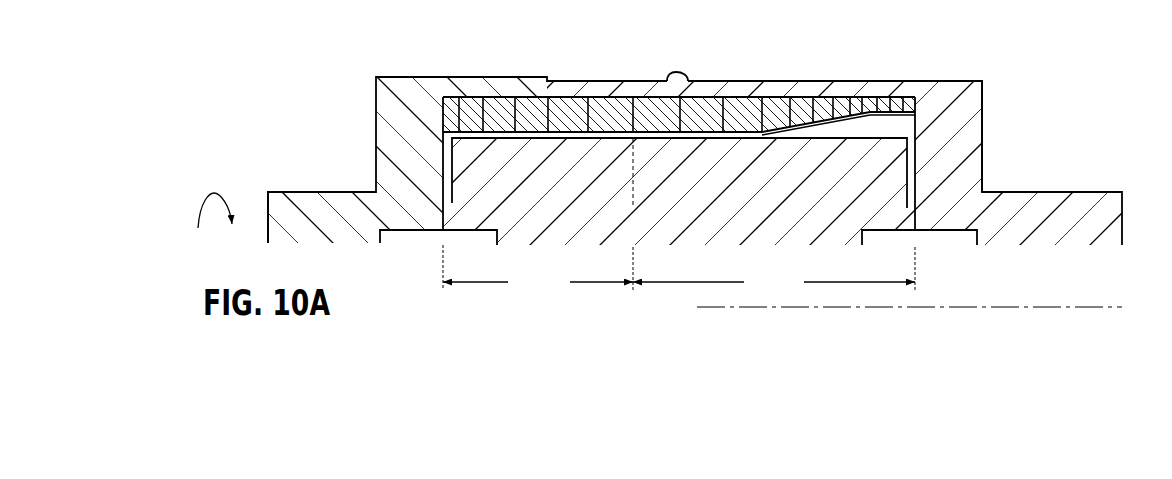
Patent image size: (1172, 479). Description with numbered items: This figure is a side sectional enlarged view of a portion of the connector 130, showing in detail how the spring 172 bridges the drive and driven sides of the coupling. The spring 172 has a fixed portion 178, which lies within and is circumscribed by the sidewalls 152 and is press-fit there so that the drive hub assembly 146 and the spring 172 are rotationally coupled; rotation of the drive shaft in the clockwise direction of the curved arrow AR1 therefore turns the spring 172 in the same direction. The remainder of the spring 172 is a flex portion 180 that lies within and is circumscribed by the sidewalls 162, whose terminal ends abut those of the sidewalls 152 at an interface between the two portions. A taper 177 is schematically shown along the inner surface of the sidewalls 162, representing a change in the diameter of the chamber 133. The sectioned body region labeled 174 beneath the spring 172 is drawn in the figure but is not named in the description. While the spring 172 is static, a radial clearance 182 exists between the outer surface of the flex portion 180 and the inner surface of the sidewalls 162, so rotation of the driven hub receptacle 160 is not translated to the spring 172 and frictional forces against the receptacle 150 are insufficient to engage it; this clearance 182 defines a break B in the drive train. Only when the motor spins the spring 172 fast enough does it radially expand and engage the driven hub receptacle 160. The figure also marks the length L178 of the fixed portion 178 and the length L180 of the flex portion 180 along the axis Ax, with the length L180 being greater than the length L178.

The connector 130 is at (613, 155).
The chamber 133 is at (897, 122).
The drive hub assembly 146 is at (348, 156).
The receptacle 150 is at (734, 76).
The sidewalls 152 is at (460, 82).
The driven hub receptacle 160 is at (933, 62).
The sidewalls 162 is at (853, 81).
The spring 172 is at (613, 166).
The substrate 174 is at (613, 175).
The taper 177 is at (740, 110).
The fixed portion 178 is at (537, 142).
The flex portion 180 is at (739, 145).
The radial clearance 182 is at (667, 80).
The break B is at (666, 58).
The curved arrow AR1 is at (213, 190).
The axis Ax is at (1052, 306).
The length L178 is at (538, 270).
The length L180 is at (774, 271).